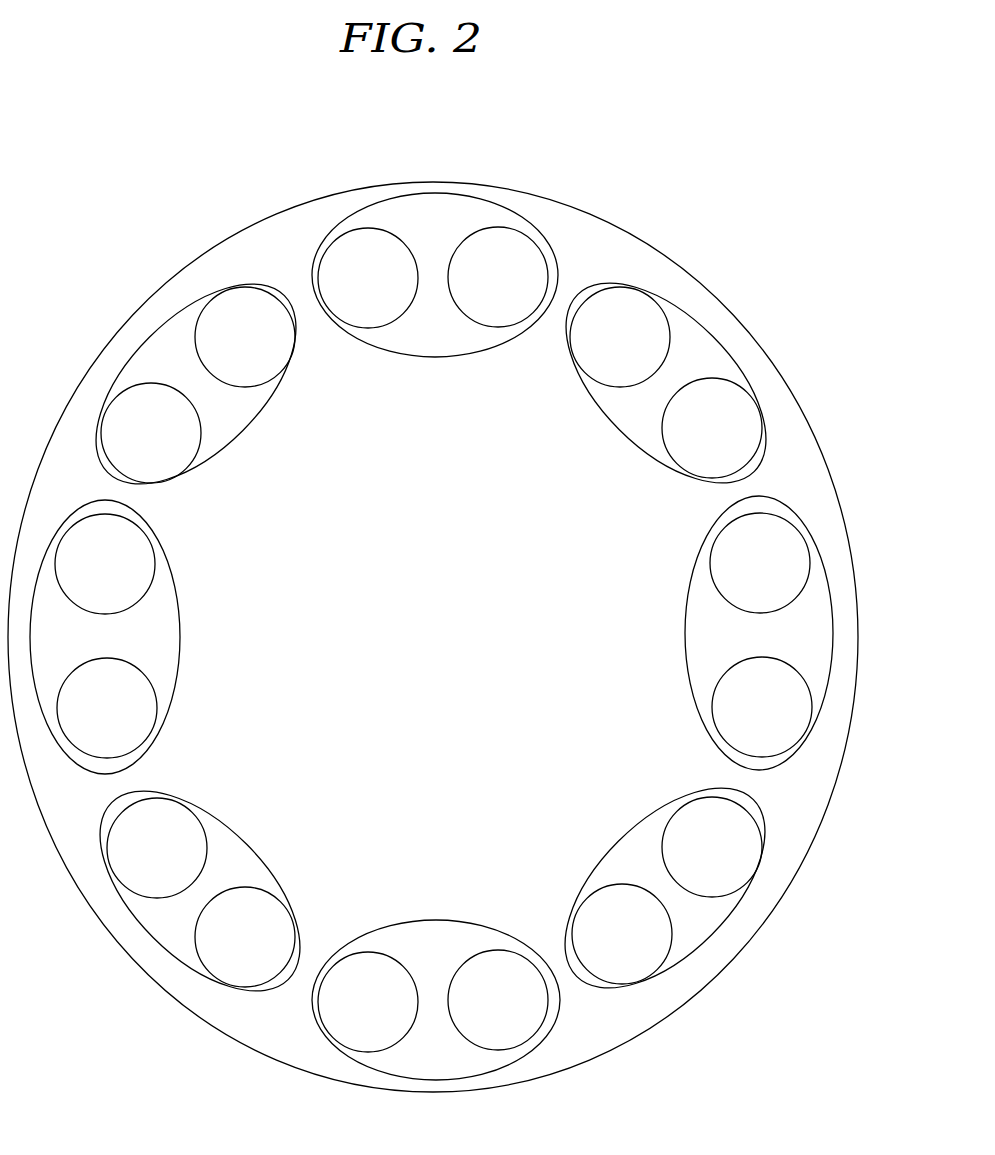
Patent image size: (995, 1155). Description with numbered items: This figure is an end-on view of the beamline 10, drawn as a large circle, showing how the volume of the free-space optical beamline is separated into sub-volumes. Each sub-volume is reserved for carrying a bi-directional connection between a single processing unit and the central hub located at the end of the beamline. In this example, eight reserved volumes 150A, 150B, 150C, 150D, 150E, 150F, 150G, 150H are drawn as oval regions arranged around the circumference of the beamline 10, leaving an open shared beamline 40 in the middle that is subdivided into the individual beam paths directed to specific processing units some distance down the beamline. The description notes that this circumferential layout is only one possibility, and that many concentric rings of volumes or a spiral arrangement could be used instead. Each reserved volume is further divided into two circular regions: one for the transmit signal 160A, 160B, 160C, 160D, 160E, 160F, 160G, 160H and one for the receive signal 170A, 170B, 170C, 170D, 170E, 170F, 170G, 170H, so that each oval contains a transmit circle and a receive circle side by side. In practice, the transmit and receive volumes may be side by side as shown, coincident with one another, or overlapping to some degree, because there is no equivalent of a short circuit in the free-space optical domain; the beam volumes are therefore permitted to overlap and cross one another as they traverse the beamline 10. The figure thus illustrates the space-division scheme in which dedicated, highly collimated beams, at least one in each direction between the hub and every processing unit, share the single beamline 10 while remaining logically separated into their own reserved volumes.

The beamline 10 is at (618, 223).
The shared beamline 40 is at (446, 643).
The reserved volume 150A is at (433, 358).
The reserved volume 150B is at (610, 438).
The reserved volume 150C is at (686, 632).
The reserved volume 150D is at (613, 832).
The reserved volume 150E is at (438, 920).
The reserved volume 150F is at (257, 838).
The reserved volume 150G is at (180, 637).
The reserved volume 150H is at (253, 438).
The transmit signal 160A is at (392, 293).
The transmit signal 160B is at (644, 352).
The transmit signal 160C is at (784, 578).
The transmit signal 160D is at (736, 862).
The transmit signal 160E is at (522, 1015).
The transmit signal 160F is at (181, 863).
The transmit signal 160G is at (129, 579).
The transmit signal 160H is at (269, 352).
The receive signal 170A is at (522, 292).
The receive signal 170B is at (736, 443).
The receive signal 170C is at (786, 722).
The receive signal 170D is at (646, 949).
The receive signal 170E is at (392, 1017).
The receive signal 170F is at (269, 952).
The receive signal 170G is at (131, 723).
The receive signal 170H is at (175, 448).